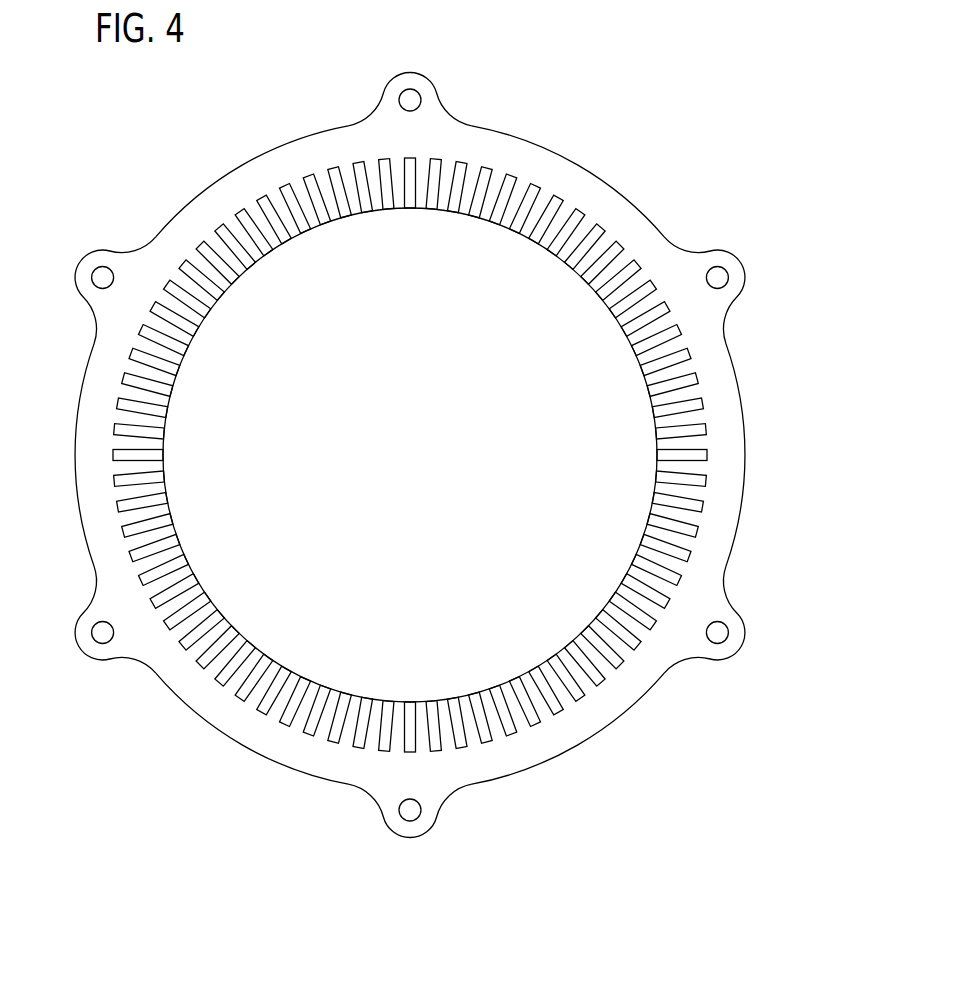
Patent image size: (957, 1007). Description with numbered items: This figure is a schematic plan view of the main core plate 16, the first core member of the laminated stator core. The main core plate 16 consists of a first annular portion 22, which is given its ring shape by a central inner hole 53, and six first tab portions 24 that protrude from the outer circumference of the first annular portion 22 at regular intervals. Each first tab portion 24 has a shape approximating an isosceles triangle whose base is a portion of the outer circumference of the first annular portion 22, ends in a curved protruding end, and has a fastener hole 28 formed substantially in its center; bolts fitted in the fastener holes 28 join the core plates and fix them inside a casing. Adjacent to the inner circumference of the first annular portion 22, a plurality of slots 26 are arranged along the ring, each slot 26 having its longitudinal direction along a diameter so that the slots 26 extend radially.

The main core plate 16 is at (412, 458).
The first annular portion 22 is at (410, 455).
The first tab portions 24 is at (412, 458).
The slots 26 is at (370, 450).
The fastener hole 28 is at (412, 458).
The inner hole 53 is at (410, 455).